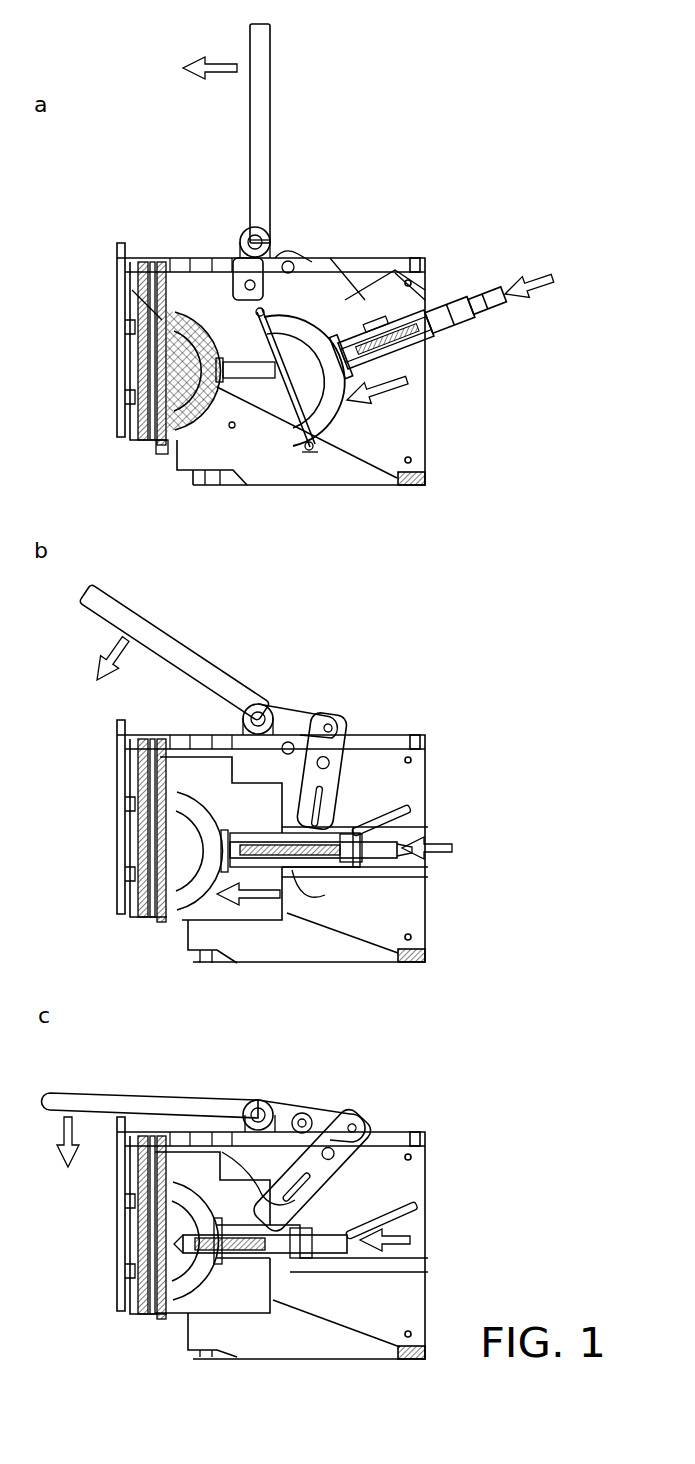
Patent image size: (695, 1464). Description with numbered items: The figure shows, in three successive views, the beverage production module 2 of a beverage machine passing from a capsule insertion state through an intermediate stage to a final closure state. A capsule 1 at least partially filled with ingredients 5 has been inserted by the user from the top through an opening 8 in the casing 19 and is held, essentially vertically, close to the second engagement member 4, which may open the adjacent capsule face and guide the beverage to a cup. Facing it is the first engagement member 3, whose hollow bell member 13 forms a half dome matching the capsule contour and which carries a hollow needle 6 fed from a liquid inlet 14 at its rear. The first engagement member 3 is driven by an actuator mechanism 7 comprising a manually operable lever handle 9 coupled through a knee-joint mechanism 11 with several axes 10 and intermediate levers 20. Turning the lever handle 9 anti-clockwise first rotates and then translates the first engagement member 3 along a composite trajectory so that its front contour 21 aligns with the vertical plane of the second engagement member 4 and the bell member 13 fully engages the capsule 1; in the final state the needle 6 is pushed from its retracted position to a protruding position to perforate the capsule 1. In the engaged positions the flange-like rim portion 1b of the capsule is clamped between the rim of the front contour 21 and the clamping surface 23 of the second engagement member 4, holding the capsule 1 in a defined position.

The capsule 1 is at (178, 458).
The flange-like rim portion 1b is at (166, 456).
The beverage production module 2 is at (330, 183).
The first engagement member 3 is at (368, 270).
The second engagement member 4 is at (123, 440).
The ingredients 5 is at (202, 326).
The hollow needle 6 is at (412, 350).
The actuator mechanism 7 is at (285, 102).
The opening 8 is at (160, 258).
The lever handle 9 is at (271, 55).
The axis 10 is at (250, 236).
The knee-joint mechanism 11 is at (225, 240).
The hollow bell member 13 is at (284, 420).
The liquid inlet 14 is at (518, 300).
The casing 19 is at (418, 257).
The intermediate lever 20 is at (312, 258).
The front contour 21 is at (290, 465).
The clamping surface 23 is at (132, 290).